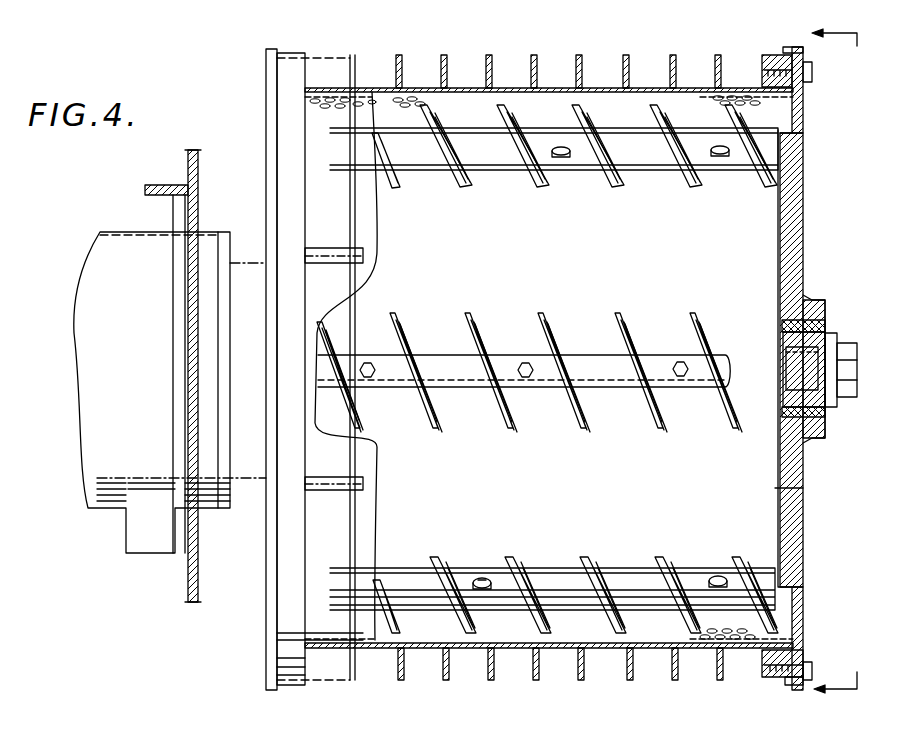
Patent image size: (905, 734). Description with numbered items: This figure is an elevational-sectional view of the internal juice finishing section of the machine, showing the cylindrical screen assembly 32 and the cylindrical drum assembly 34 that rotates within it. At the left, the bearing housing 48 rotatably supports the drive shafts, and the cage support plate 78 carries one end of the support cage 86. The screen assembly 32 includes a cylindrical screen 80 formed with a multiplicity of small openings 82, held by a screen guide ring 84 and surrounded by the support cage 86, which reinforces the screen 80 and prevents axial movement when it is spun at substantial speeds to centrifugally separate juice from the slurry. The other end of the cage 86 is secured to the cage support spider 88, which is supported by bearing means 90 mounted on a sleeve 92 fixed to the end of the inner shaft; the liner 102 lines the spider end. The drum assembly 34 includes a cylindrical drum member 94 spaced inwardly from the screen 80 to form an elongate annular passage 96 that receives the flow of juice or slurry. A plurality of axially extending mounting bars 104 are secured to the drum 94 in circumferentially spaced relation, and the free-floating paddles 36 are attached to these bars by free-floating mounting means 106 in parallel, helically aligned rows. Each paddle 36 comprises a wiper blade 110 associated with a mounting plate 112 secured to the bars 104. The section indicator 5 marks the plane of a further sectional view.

The section line 5- 5 is at (845, 369).
The cylindrical screen assembly 32 is at (812, 96).
The cylindrical drum assembly 34 is at (795, 135).
The free-floating paddles 36 is at (482, 190).
The bearing housing 48 is at (138, 372).
The cage support plate 78 is at (266, 632).
The cylindrical screen 80 is at (632, 88).
The small openings 82 is at (410, 100).
The screen guide ring 84 is at (305, 65).
The support cage 86 is at (550, 56).
The cage support spider 88 is at (804, 231).
The bearing means 90 is at (823, 327).
The sleeve 92 is at (828, 401).
The cylindrical drum member 94 is at (803, 488).
The elongate annular passage 96 is at (428, 633).
The liner 102 is at (782, 549).
The mounting bars 104 is at (668, 168).
The free-floating mounting means 106 is at (657, 142).
The wiper blade 110 is at (430, 114).
The mounting plate 112 is at (453, 173).